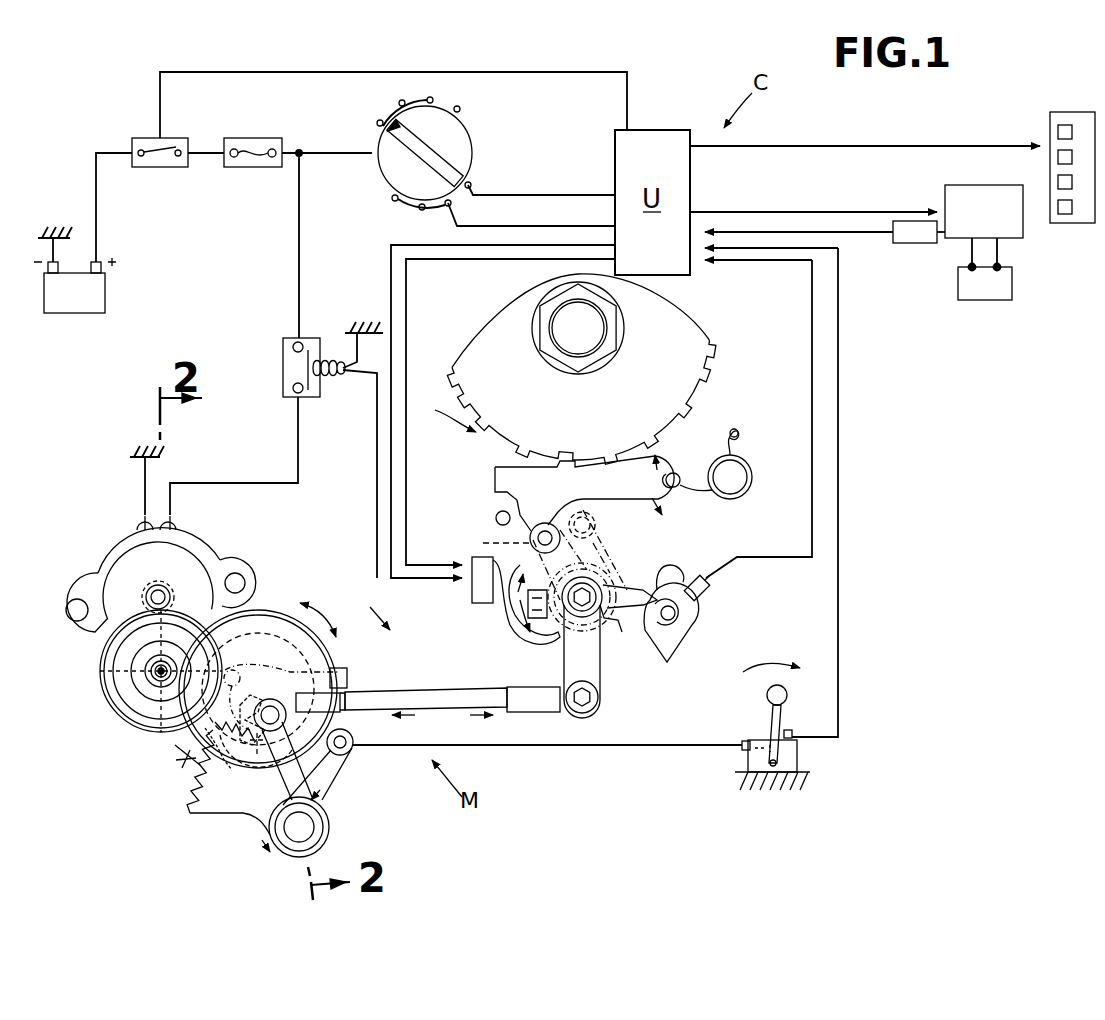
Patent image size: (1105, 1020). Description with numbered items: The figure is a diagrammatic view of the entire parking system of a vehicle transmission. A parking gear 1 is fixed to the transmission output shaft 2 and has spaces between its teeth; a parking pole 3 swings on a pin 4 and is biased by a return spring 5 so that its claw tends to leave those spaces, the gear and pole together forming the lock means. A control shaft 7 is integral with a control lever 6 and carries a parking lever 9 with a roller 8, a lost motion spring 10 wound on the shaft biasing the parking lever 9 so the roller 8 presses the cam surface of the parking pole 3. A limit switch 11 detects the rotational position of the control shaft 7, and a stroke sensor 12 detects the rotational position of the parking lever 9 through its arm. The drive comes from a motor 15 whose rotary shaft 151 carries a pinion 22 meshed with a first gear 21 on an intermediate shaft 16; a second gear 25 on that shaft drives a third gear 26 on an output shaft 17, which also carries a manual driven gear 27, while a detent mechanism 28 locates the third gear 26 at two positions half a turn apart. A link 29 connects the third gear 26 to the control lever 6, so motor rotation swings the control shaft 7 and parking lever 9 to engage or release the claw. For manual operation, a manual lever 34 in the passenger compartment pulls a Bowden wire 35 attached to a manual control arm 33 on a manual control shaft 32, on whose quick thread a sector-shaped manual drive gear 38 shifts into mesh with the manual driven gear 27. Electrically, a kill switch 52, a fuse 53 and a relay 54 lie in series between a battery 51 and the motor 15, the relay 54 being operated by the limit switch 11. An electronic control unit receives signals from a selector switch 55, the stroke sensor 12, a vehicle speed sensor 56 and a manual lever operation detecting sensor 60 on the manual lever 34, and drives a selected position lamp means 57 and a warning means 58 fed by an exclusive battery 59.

The parking gear 1 is at (700, 332).
The output shaft 2 is at (553, 361).
The parking pole 3 is at (495, 503).
The pin 4 is at (737, 480).
The return spring 5 is at (698, 488).
The control lever 6 is at (577, 657).
The control shaft 7 is at (613, 587).
The roller 8 is at (497, 543).
The parking lever 9 is at (605, 545).
The lost motion spring 10 is at (603, 643).
The limit switch 11 is at (495, 618).
The stroke sensor 12 is at (688, 618).
The motor 15 is at (220, 549).
The rotary shaft 151 is at (158, 585).
The intermediate shaft 16 is at (140, 733).
The output shaft 17 is at (276, 749).
The first gear 21 is at (105, 707).
The pinion 22 is at (147, 588).
The second gear 25 is at (140, 672).
The third gear 26 is at (267, 603).
The manual driven gear 27 is at (340, 668).
The detent mechanism 28 is at (205, 731).
The link 29 is at (408, 693).
The manual control shaft 32 is at (612, 536).
The manual control arm 33 is at (340, 767).
The manual lever 34 is at (767, 713).
The Bowden wire 35 is at (597, 750).
The manual drive gear 38 is at (190, 797).
The battery 51 is at (86, 308).
The kill switch 52 is at (166, 162).
The fuse 53 is at (256, 162).
The relay 54 is at (283, 377).
The selector switch 55 is at (475, 146).
The vehicle speed sensor 56 is at (918, 243).
The selected position lamp means 57 is at (1073, 225).
The warning means 58 is at (963, 188).
The exclusive battery 59 is at (1002, 292).
The manual lever operation detecting sensor 60 is at (790, 733).